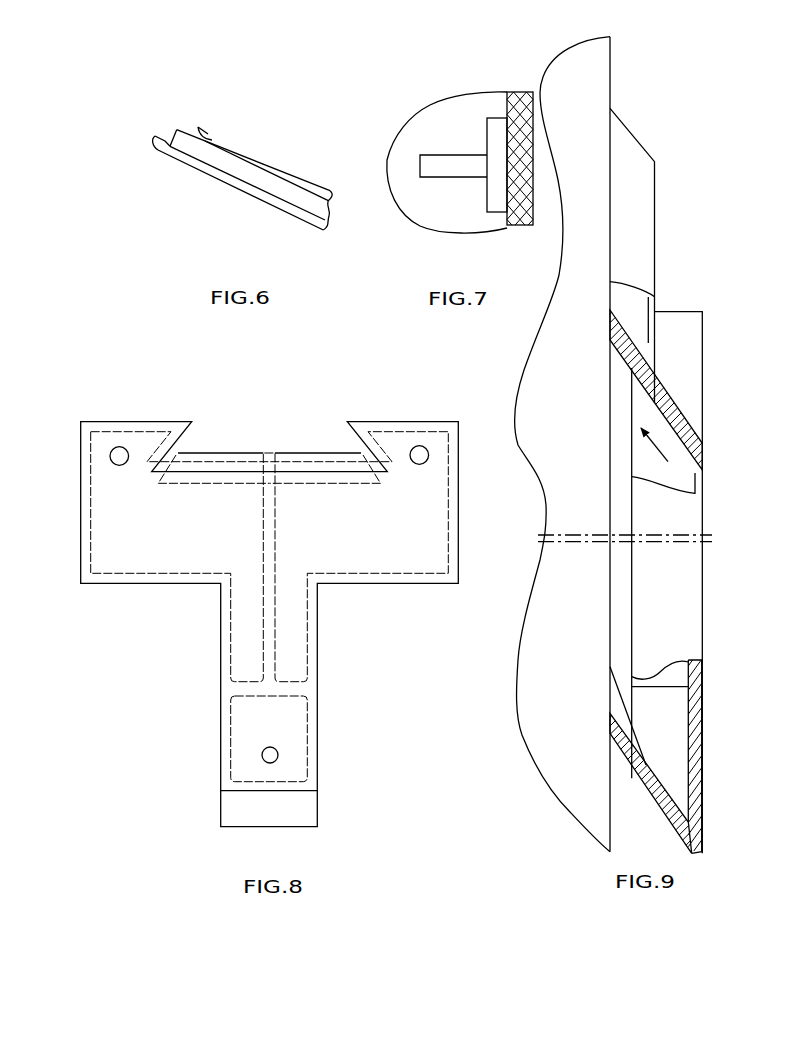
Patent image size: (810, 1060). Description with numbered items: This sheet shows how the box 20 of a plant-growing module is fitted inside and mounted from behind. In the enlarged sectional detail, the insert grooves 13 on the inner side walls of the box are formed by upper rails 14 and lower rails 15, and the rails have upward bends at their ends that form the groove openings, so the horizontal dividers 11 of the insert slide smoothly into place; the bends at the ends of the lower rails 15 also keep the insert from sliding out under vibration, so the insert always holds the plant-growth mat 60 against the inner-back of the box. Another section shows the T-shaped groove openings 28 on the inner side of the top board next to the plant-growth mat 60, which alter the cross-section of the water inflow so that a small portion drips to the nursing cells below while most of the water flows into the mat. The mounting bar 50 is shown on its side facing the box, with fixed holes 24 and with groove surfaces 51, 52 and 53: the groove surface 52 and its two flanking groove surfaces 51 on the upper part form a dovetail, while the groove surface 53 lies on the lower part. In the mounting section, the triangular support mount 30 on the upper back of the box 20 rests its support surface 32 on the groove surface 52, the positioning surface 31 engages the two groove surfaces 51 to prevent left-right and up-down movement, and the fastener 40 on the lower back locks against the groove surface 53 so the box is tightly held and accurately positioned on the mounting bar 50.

In FIG. 6, the horizontal dividers 11 is at (198, 153).
In FIG. 6, the insert grooves 13 is at (188, 124).
In FIG. 6, the upper rails 14 is at (208, 133).
In FIG. 6, the lower rails 15 is at (158, 133).
In FIG. 7, the T-shaped groove openings 28 is at (467, 167).
In FIG. 7, the plant-growth mat 60 is at (522, 222).
In FIG. 8, the fixed holes 24 is at (118, 448).
In FIG. 8, the mounting bar 50 is at (182, 412).
In FIG. 8, the groove surfaces 51 is at (175, 455).
In FIG. 8, the groove surface 52 is at (297, 455).
In FIG. 9, the groove surface 52 is at (660, 402).
In FIG. 8, the groove surface 53 is at (285, 781).
In FIG. 9, the groove surface 53 is at (695, 760).
In FIG. 9, the box 20 is at (623, 89).
In FIG. 9, the support mount 30 is at (642, 173).
In FIG. 9, the positioning surface 31 is at (628, 362).
In FIG. 9, the support surface 32 is at (633, 740).
In FIG. 9, the fastener 40 is at (641, 725).